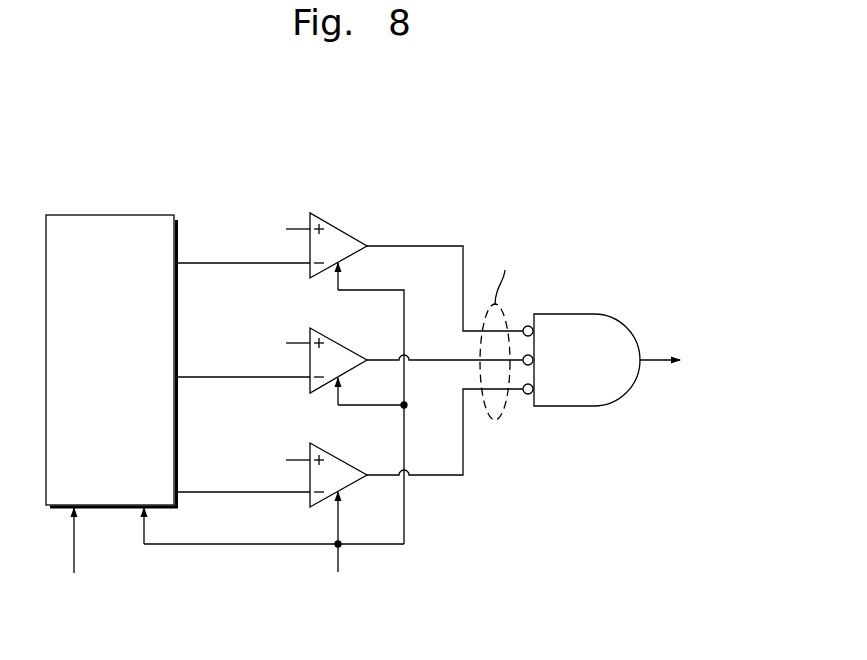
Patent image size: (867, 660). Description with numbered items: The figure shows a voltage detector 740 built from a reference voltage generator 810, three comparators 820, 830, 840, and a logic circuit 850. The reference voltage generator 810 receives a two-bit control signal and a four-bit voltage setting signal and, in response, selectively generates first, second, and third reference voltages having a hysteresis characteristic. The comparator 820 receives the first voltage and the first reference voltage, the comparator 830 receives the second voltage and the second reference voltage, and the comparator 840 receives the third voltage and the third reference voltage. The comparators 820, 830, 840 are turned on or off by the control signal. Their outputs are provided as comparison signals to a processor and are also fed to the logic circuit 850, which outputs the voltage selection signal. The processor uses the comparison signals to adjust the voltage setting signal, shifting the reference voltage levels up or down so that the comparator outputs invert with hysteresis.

The voltage detector 740 is at (537, 151).
The reference voltage generator 810 is at (123, 215).
The comparator 820 is at (339, 224).
The comparator 830 is at (339, 338).
The comparator 840 is at (339, 453).
The logic circuit 850 is at (590, 314).